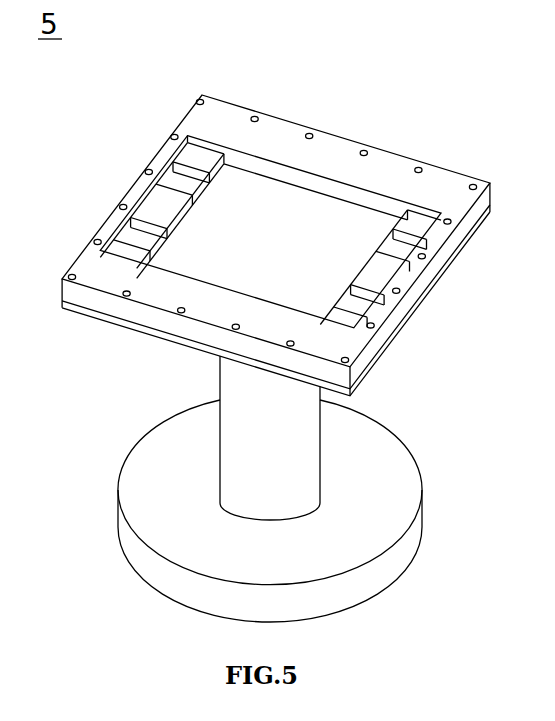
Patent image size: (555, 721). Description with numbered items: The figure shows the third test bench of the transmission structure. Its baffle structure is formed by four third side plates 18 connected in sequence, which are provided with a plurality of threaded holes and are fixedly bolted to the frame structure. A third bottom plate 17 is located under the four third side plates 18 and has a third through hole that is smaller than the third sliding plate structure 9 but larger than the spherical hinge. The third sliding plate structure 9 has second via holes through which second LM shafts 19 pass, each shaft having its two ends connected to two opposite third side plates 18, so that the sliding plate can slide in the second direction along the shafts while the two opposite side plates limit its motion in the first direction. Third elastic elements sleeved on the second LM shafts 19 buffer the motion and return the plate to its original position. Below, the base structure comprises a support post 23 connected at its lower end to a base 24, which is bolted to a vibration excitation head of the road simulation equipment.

The third side plates 18 is at (218, 122).
The third sliding plate structure 9 is at (281, 212).
The second LM shafts 19 is at (163, 168).
The third bottom plate 17 is at (127, 222).
The support post 23 is at (270, 456).
The base 24 is at (168, 509).